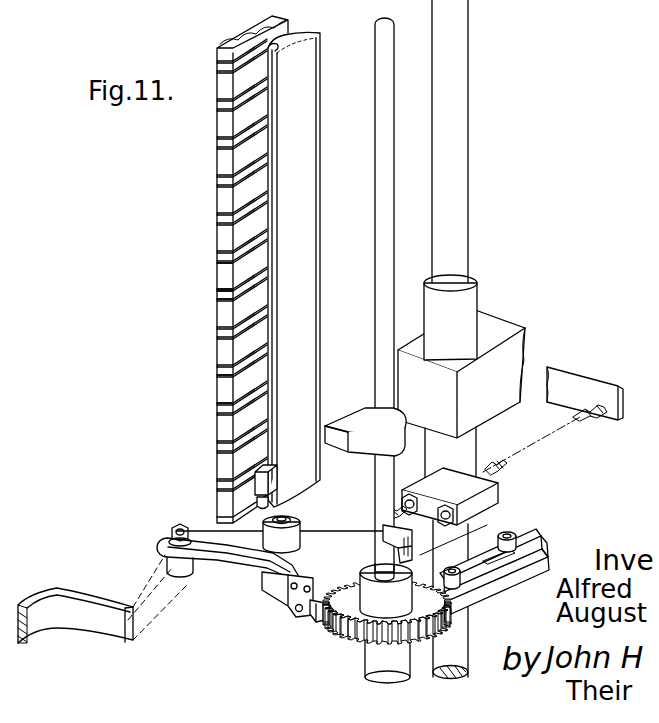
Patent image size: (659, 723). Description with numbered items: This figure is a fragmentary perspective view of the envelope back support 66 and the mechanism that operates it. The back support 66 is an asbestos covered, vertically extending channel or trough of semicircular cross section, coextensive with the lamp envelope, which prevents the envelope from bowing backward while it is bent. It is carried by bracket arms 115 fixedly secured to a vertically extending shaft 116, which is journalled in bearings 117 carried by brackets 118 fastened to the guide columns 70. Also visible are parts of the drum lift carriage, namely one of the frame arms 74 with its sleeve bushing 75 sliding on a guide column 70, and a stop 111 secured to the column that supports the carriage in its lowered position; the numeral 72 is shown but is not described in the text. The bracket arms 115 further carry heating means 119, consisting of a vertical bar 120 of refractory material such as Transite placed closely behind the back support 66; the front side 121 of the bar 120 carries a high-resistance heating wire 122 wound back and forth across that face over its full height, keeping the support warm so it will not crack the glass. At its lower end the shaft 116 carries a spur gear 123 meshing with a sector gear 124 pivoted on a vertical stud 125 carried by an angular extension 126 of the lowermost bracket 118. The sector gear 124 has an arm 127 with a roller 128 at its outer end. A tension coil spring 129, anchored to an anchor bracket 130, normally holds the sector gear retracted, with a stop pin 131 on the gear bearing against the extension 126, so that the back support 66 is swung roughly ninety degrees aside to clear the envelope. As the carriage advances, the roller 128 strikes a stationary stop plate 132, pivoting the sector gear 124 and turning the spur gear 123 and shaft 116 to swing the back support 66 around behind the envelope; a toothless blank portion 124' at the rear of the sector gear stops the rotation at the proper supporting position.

The frame member 72 is at (162, 5).
The envelope back support 66 is at (310, 60).
The guide column 70 is at (468, 83).
The frame arm 74 is at (495, 326).
The sleeve bushing 75 is at (466, 288).
The stop 111 is at (493, 491).
The bracket arm 115 is at (345, 424).
The shaft 116 is at (378, 338).
The bearing 117 is at (373, 667).
The bracket 118 is at (495, 580).
The heating means 119 is at (217, 205).
The bar 120 is at (221, 273).
The front side of the bar 121 is at (241, 311).
The heating wire 122 is at (243, 402).
The spur gear 123 is at (345, 638).
The sector gear 124 is at (279, 529).
The blank portion 124' is at (373, 545).
The stud 125 is at (288, 512).
The angular extension 126 is at (275, 590).
The arm 127 is at (201, 533).
The roller 128 is at (189, 571).
The tension coil spring 129 is at (500, 457).
The anchor bracket 130 is at (582, 378).
The stop pin 131 is at (312, 617).
The stop plate 132 is at (107, 633).